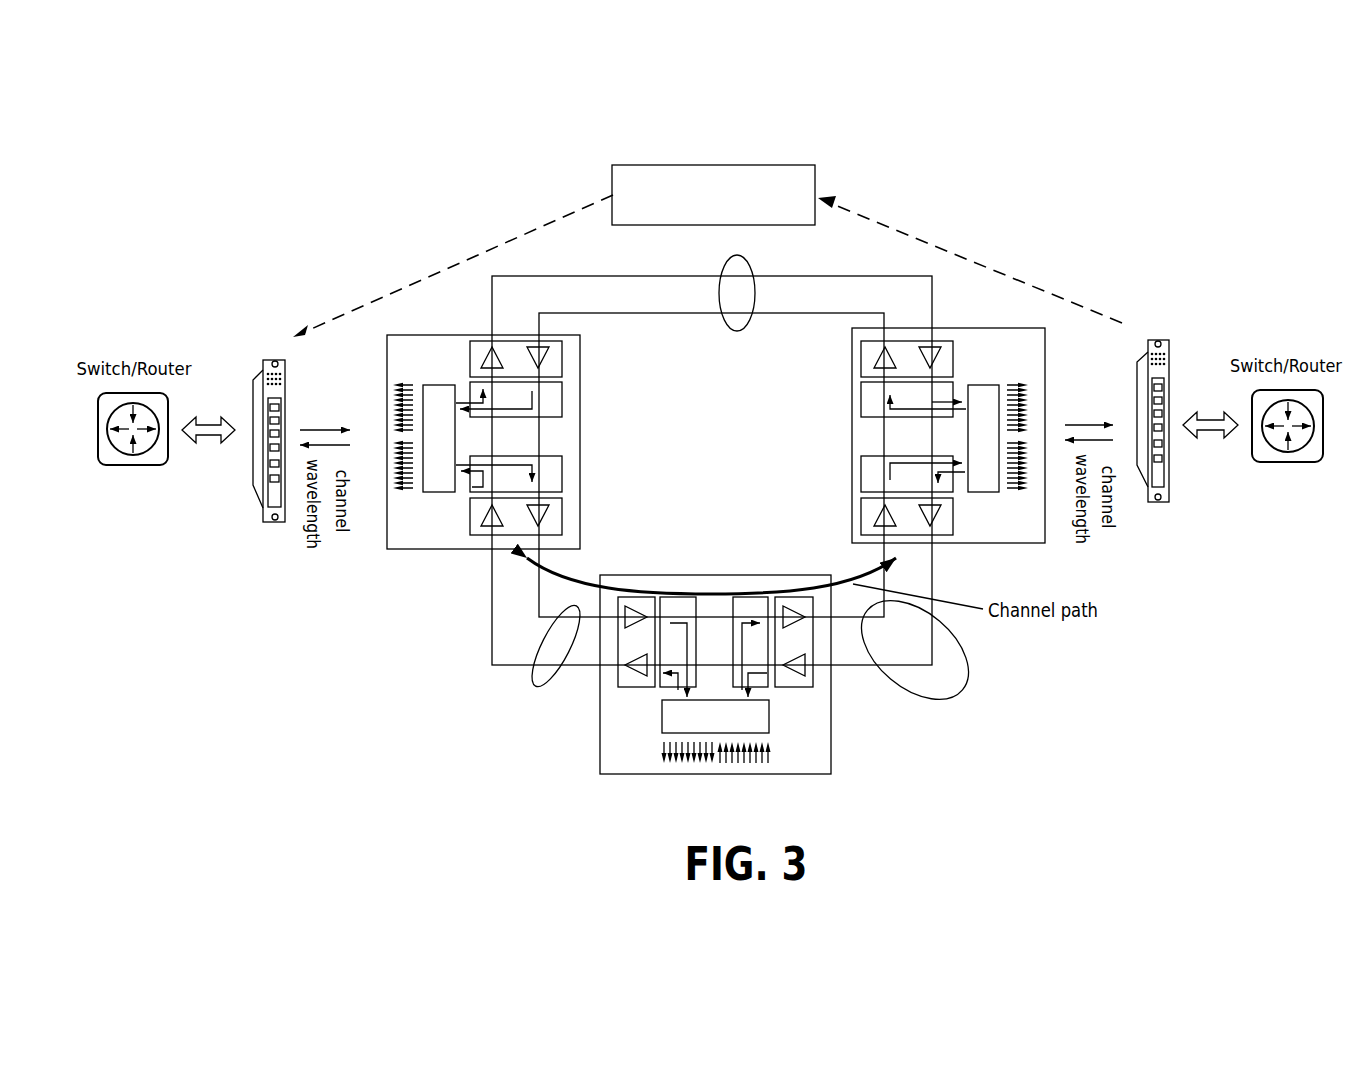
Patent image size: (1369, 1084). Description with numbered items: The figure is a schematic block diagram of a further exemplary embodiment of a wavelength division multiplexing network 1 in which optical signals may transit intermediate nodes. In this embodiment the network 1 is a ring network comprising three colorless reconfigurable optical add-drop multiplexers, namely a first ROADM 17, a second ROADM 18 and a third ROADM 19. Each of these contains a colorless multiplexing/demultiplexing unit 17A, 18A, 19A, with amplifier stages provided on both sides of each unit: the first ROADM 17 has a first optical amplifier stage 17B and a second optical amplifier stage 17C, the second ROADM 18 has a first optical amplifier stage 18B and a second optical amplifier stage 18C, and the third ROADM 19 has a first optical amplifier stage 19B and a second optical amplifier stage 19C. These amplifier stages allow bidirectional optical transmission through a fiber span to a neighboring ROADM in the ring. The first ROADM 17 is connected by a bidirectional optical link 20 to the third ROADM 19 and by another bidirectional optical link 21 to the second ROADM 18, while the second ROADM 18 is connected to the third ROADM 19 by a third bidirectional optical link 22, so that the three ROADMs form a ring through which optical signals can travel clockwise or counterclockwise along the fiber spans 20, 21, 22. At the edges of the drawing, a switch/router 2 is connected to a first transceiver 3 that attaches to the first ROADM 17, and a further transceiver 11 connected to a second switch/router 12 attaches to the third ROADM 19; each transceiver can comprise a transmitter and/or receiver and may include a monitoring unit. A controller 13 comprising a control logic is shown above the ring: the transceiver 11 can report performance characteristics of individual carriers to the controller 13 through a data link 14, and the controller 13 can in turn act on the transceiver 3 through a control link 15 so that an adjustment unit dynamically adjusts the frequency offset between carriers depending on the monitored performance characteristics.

The WDM network 1 is at (1082, 134).
The switch/router 2 is at (133, 466).
The transceiver 3 is at (273, 522).
The transceiver 11 is at (1158, 503).
The switch/router 12 is at (1288, 463).
The controller 13 is at (725, 165).
The data link 14 is at (1018, 280).
The control link 15 is at (486, 251).
The ROADM 17 is at (435, 548).
The multiplexing/demultiplexing unit 17A is at (440, 390).
The first optical amplifier stage 17B is at (562, 358).
The second optical amplifier stage 17C is at (562, 508).
The ROADM 18 is at (817, 774).
The multiplexing/demultiplexing unit 18A is at (672, 716).
The first optical amplifier stage 18B is at (638, 607).
The second optical amplifier stage 18C is at (790, 602).
The ROADM 19 is at (993, 542).
The multiplexing/demultiplexing unit 19A is at (985, 390).
The first optical amplifier stage 19B is at (942, 530).
The second optical amplifier stage 19C is at (947, 340).
The bidirectional optical link 20 is at (737, 308).
The bidirectional optical link 21 is at (555, 657).
The bidirectional optical link 22 is at (923, 650).